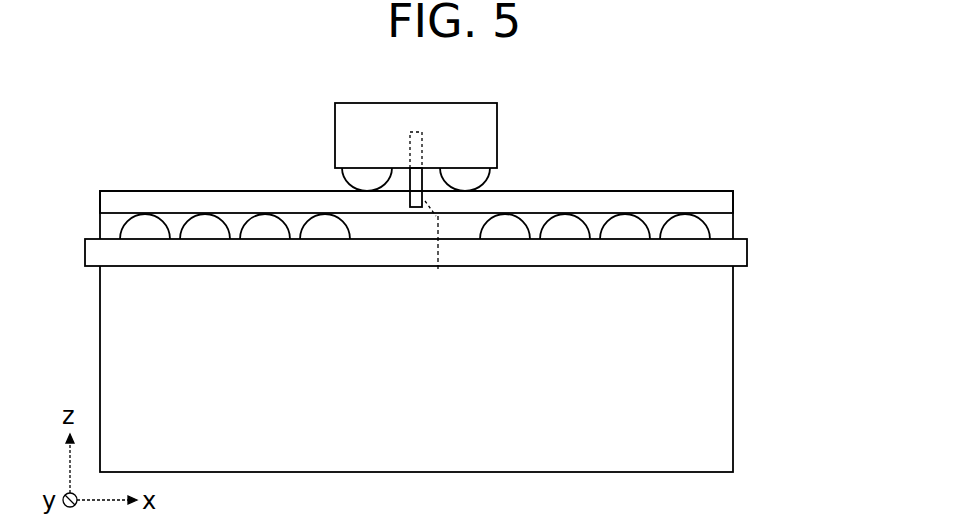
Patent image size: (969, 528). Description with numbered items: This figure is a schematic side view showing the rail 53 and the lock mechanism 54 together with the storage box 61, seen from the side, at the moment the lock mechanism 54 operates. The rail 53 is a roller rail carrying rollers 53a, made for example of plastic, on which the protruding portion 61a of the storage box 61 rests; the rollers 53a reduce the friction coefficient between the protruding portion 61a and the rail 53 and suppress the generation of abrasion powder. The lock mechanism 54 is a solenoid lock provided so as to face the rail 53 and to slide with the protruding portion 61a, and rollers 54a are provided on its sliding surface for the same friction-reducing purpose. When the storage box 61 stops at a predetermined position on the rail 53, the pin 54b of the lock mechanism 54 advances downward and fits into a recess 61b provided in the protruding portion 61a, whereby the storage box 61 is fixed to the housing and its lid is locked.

The rail 53 is at (737, 253).
The rollers 53a is at (708, 226).
The lock mechanism 54 is at (497, 138).
The rollers 54a is at (486, 175).
The pin 54b is at (418, 130).
The storage box 61 is at (735, 387).
The protruding portion 61a is at (735, 203).
The recess 61b is at (444, 254).